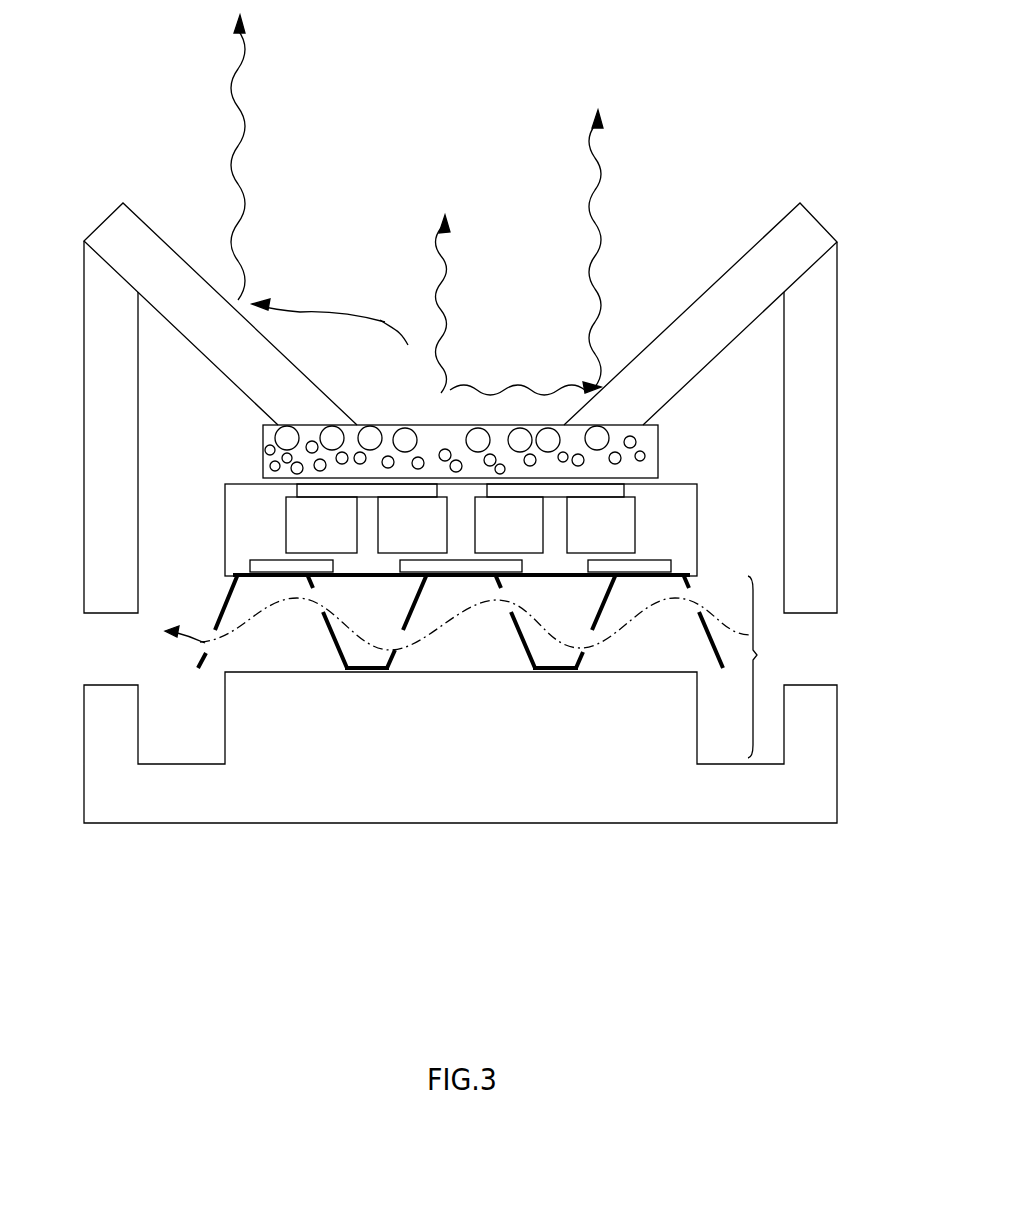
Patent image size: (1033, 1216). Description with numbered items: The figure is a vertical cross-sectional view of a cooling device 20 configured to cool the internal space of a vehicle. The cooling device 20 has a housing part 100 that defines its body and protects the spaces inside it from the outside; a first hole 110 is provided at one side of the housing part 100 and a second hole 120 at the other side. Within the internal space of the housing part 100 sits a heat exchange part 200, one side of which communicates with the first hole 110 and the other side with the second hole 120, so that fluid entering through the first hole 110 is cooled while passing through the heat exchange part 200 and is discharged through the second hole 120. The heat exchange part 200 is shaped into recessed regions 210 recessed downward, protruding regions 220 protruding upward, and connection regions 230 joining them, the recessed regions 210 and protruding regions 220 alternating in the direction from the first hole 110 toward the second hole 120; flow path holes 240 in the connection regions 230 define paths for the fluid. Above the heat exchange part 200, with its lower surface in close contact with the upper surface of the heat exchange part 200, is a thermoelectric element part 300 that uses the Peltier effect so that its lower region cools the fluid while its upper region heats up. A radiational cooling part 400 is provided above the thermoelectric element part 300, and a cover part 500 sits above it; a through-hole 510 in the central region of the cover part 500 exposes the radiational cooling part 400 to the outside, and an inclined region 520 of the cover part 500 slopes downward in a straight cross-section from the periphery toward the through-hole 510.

The cooling device 20 is at (120, 29).
The housing part 100 is at (333, 808).
The first hole 110 is at (818, 658).
The second hole 120 is at (112, 660).
The heat exchange part 200 is at (481, 652).
The recessed region 210 is at (557, 668).
The protruding region 220 is at (672, 578).
The connection region 230 is at (598, 588).
The flow path hole 240 is at (507, 610).
The thermoelectric element part 300 is at (225, 518).
The radiational cooling part 400 is at (262, 452).
The cover part 500 is at (767, 178).
The through-hole 510 is at (424, 411).
The inclined region 520 is at (158, 248).